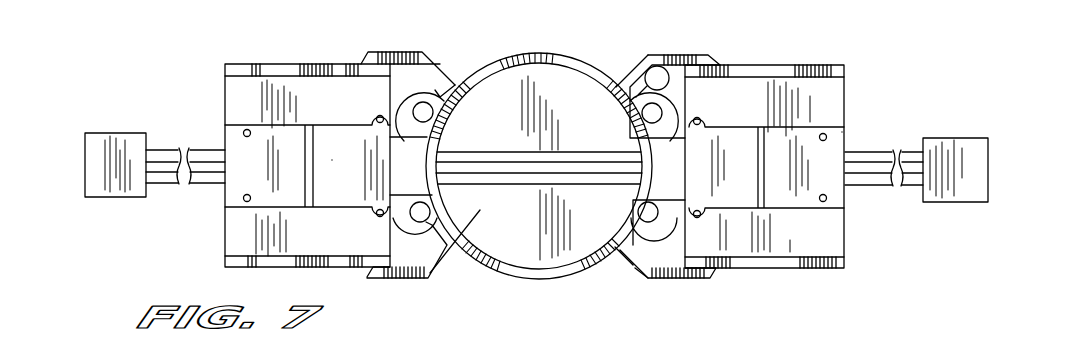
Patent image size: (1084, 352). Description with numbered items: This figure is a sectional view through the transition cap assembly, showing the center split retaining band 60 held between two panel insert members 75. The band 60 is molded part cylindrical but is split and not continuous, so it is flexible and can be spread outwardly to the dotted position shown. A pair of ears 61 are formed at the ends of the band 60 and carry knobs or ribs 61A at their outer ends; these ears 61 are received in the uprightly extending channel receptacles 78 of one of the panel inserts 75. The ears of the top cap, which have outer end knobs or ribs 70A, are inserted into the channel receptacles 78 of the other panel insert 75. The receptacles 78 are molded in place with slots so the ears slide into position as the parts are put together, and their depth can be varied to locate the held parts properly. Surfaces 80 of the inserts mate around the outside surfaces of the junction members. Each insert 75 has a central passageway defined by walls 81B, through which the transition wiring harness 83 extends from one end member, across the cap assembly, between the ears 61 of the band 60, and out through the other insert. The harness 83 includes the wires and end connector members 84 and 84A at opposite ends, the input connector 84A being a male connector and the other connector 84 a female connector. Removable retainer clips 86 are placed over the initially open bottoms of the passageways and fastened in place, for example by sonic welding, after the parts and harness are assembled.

The center split retaining band 60 is at (612, 66).
The ears 61 is at (628, 252).
The knobs or ribs 61A is at (655, 118).
The knobs or ribs 70A is at (425, 110).
The panel insert members 75 is at (402, 52).
The channel receptacles 78 is at (405, 195).
The surfaces 80 is at (467, 238).
The walls 81B is at (251, 63).
The transition wiring harness 83 is at (510, 157).
The end connector member 84 is at (112, 135).
The input end connector 84A is at (957, 147).
The removable retainer clips 86 is at (332, 160).